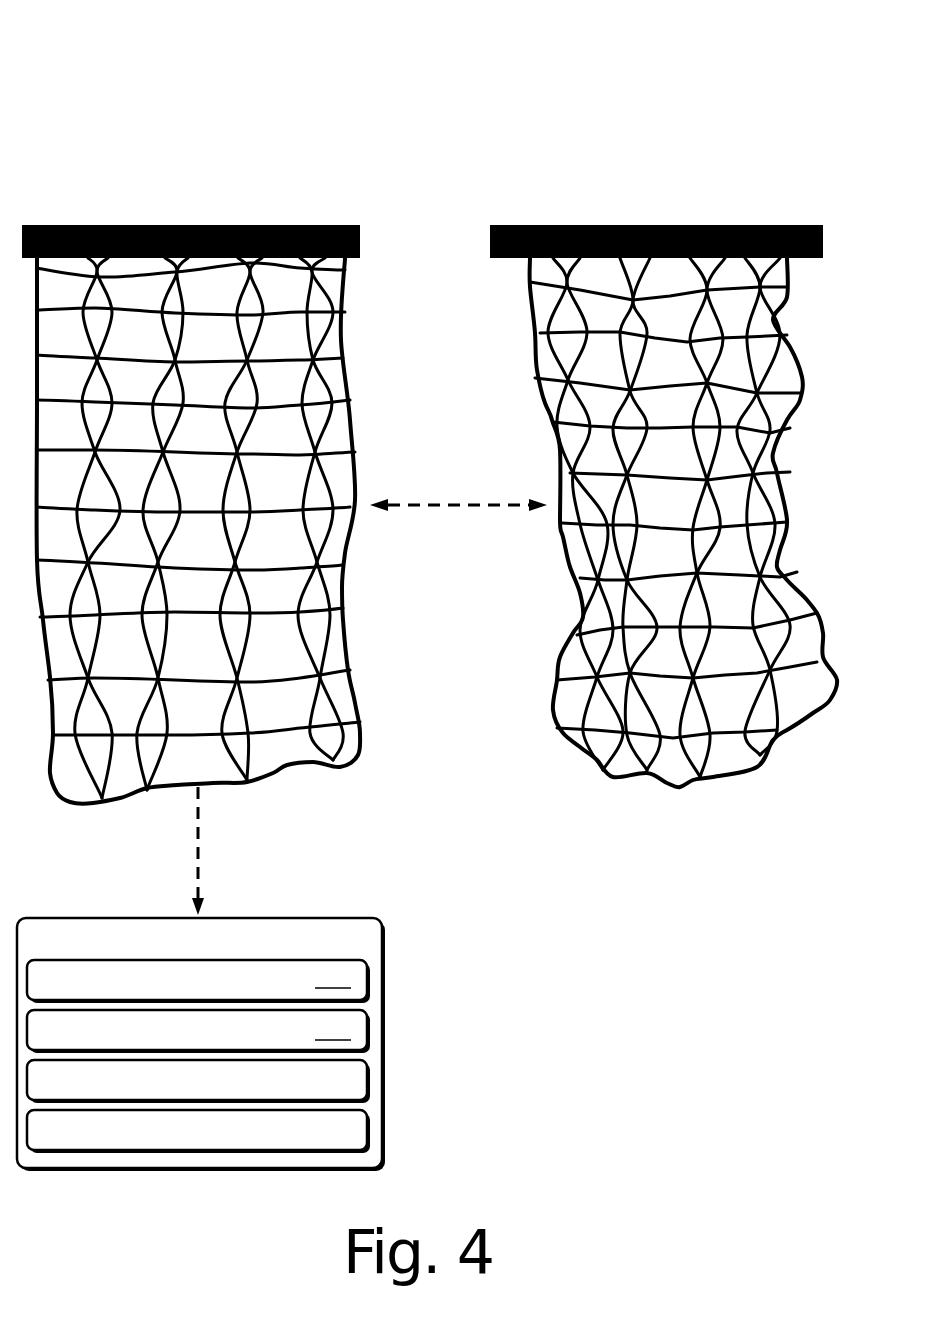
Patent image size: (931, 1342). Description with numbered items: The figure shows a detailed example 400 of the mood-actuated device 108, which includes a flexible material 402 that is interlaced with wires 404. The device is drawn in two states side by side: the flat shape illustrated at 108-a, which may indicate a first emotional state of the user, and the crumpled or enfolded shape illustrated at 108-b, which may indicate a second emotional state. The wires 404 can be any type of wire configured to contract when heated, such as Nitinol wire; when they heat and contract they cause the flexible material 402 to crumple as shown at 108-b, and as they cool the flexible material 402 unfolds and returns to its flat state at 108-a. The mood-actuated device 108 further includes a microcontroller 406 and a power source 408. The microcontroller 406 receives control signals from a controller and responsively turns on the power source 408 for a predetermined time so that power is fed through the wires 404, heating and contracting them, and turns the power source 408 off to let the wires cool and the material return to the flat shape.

The detailed example 400 is at (113, 45).
The flat shape 108-a is at (175, 185).
The crumpled shape 108-b is at (647, 185).
The mood-actuated device 108 is at (369, 948).
The flexible material 402 is at (352, 410).
The wires 404 is at (350, 655).
The microcontroller 406 is at (351, 1090).
The power source 408 is at (351, 1140).